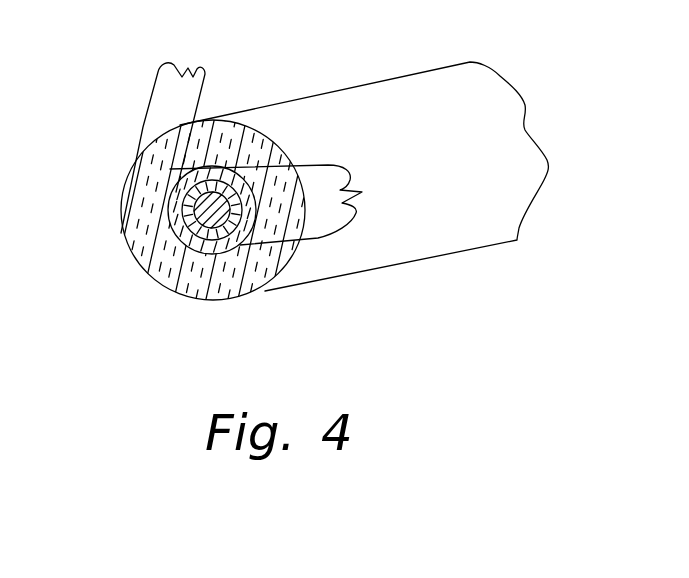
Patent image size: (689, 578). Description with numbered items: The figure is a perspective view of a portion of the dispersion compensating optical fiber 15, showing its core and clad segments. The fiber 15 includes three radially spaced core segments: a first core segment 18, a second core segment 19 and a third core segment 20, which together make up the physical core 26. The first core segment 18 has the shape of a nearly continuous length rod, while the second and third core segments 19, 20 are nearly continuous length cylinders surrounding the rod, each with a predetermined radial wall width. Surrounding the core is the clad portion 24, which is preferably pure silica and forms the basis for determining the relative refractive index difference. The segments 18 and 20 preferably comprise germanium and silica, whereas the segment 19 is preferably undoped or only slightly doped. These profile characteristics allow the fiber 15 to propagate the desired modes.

The dispersion compensating optical fiber 15 is at (400, 87).
The first core segment 18 is at (165, 275).
The second core segment 19 is at (157, 223).
The third core segment 20 is at (187, 210).
The clad portion 24 is at (188, 68).
The physical core 26 is at (372, 192).